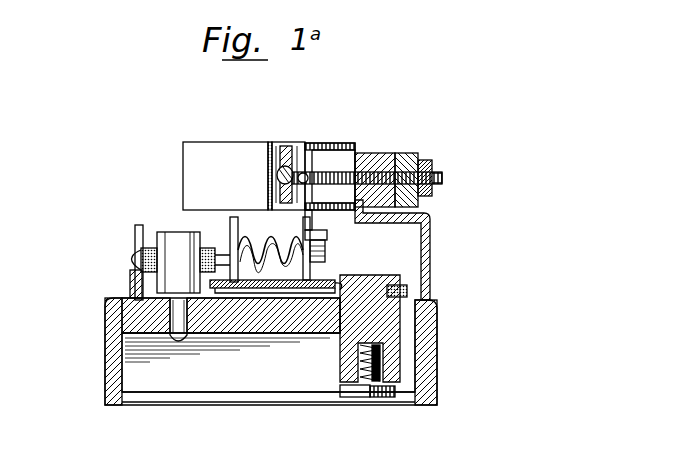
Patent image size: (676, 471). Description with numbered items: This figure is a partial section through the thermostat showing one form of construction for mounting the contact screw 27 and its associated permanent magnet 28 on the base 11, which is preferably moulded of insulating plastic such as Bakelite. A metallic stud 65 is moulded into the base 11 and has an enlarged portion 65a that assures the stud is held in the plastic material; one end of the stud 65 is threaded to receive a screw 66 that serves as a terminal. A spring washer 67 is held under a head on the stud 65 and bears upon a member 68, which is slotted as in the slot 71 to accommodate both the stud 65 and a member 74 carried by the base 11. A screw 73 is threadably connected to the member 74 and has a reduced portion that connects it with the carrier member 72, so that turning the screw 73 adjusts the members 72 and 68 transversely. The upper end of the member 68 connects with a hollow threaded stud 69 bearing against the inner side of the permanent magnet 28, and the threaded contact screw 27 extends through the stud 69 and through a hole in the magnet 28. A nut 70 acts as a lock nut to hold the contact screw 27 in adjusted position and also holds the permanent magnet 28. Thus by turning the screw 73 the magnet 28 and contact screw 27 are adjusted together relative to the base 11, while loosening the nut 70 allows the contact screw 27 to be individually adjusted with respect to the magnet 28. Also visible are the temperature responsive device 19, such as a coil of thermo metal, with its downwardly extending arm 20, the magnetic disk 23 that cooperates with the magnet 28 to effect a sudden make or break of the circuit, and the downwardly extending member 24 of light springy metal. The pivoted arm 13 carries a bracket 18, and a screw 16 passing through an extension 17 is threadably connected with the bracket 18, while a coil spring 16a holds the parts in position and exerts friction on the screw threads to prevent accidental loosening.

The base 11 is at (107, 328).
The arm 13 is at (270, 283).
The screw 16 is at (328, 256).
The coil spring 16a is at (257, 236).
The extension 17 is at (327, 234).
The bracket 18 is at (220, 232).
The temperature responsive device 19 is at (184, 142).
The downwardly extending arm 20 is at (268, 150).
The disk of magnetic material 23 is at (292, 148).
The downwardly extending member 24 is at (285, 142).
The contact screw 27 is at (340, 142).
The permanent magnet 28 is at (372, 155).
The metallic stud 65 is at (385, 360).
The enlarged portion 65a is at (402, 312).
The screw 66 is at (358, 398).
The spring washer 67 is at (402, 288).
The member 68 is at (433, 250).
The hollow threaded stud 69 is at (400, 157).
The nut 70 is at (425, 160).
The slot 71 is at (240, 322).
The carrier member 72 is at (135, 282).
The screw 73 is at (132, 251).
The member 74 is at (135, 224).